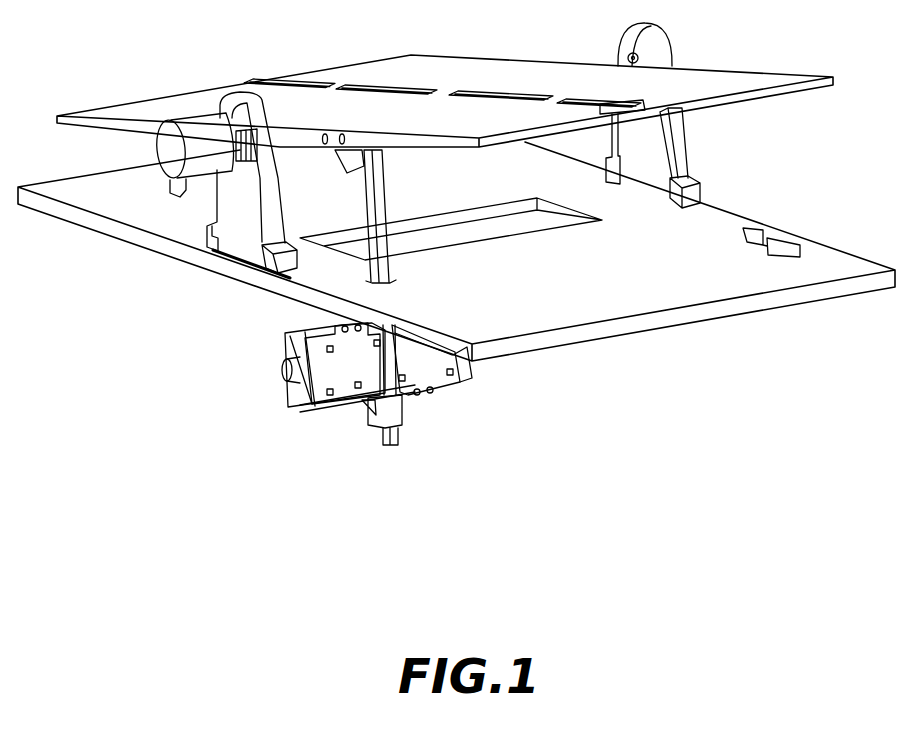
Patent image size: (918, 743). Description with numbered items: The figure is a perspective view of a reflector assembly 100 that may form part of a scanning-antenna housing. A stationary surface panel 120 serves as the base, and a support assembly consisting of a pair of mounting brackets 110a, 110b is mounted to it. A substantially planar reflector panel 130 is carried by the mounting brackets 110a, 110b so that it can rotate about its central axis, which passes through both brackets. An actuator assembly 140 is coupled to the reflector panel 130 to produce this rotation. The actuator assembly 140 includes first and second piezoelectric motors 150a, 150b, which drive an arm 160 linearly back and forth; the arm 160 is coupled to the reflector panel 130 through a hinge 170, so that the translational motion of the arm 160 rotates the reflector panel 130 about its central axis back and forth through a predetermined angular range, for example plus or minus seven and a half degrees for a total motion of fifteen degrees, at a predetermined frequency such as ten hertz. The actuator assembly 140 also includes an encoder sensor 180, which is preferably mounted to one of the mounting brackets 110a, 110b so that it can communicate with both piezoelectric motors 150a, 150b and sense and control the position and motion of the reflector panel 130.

The reflector assembly 100 is at (100, 455).
The mounting bracket 110a is at (243, 233).
The mounting bracket 110b is at (655, 142).
The stationary surface panel 120 is at (595, 305).
The reflector panel 130 is at (383, 72).
The actuator assembly 140 is at (438, 447).
The first piezoelectric motor 150a is at (353, 367).
The second piezoelectric motor 150b is at (423, 367).
The arm 160 is at (366, 250).
The hinge 170 is at (347, 160).
The encoder sensor 180 is at (197, 125).